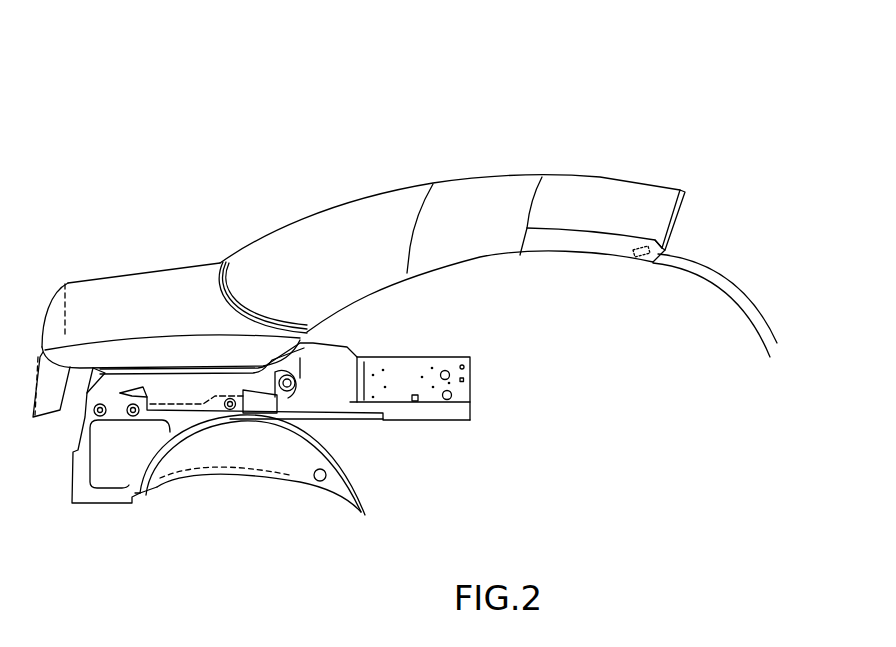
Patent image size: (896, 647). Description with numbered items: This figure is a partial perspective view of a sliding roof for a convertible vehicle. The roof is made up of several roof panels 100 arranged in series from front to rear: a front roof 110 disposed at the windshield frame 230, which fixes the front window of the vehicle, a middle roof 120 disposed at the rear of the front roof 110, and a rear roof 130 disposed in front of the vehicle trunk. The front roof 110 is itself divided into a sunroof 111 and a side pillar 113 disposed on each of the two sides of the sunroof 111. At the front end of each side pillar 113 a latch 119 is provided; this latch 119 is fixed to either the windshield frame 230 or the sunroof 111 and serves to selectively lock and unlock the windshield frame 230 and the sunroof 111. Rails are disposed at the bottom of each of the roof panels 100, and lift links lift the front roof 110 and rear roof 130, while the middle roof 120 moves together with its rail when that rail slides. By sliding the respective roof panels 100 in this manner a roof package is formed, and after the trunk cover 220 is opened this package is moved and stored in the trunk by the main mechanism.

The roof panels 100 is at (498, 203).
The front roof 110 is at (652, 233).
The sunroof 111 is at (632, 190).
The side pillar 113 is at (667, 247).
The latch 119 is at (640, 257).
The middle roof 120 is at (485, 187).
The rear roof 130 is at (360, 213).
The trunk cover 220 is at (130, 282).
The windshield frame 230 is at (743, 307).